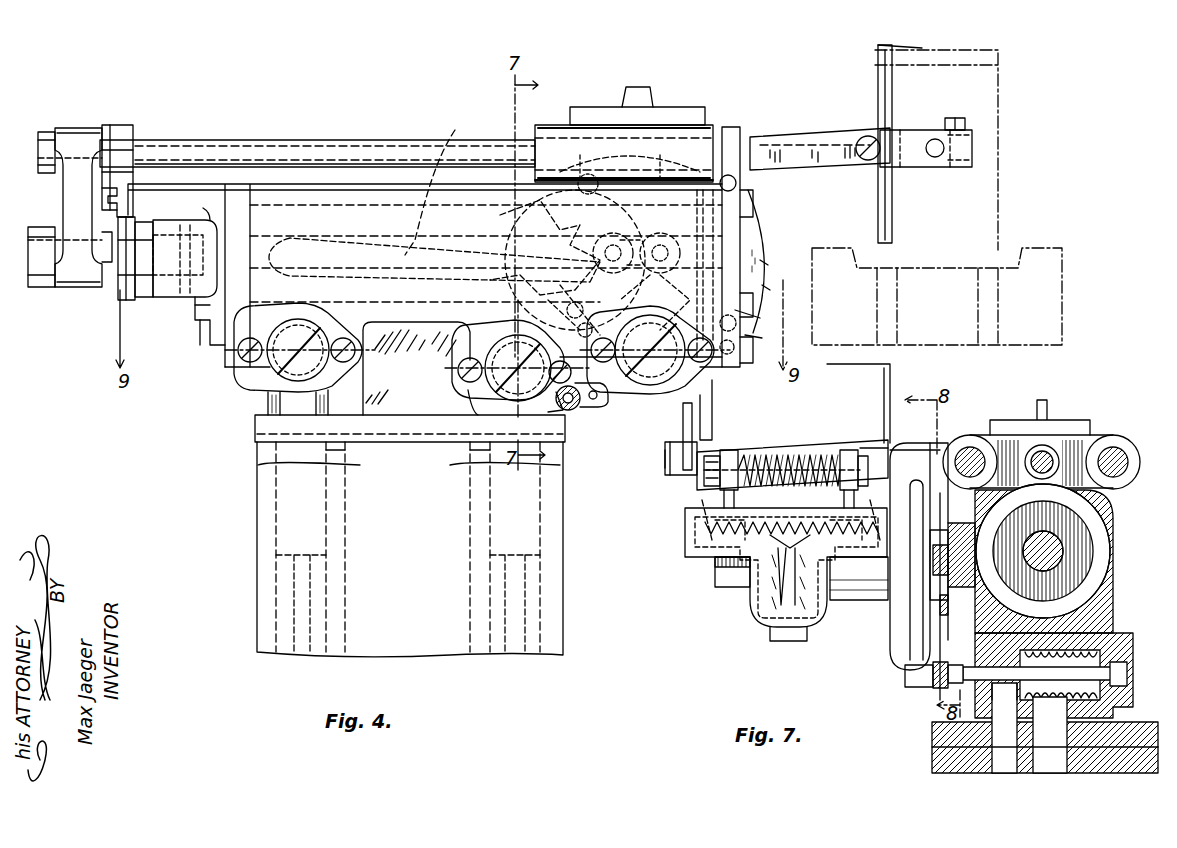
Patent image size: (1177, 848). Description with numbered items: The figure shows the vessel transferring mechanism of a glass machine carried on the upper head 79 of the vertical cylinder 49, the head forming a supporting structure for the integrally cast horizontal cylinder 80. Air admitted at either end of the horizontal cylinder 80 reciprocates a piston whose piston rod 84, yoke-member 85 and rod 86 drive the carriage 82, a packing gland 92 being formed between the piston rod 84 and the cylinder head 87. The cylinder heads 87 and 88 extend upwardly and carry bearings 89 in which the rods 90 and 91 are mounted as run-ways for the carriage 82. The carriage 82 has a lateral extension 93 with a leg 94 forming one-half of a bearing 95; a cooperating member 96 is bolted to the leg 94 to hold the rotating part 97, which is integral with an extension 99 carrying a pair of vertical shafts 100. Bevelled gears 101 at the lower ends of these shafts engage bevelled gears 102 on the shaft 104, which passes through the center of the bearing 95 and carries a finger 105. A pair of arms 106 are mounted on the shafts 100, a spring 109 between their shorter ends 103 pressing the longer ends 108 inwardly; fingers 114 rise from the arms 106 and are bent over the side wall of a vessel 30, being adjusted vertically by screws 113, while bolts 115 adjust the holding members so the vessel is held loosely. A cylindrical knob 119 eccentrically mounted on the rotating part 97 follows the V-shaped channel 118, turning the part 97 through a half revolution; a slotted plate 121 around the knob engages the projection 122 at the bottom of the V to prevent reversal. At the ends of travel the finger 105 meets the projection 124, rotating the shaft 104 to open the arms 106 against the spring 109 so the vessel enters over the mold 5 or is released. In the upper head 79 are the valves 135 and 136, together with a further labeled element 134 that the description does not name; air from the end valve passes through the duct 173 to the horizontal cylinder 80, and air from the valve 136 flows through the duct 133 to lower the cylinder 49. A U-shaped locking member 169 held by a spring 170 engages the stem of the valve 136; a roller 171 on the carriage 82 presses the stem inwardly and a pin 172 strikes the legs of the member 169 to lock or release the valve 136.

In FIG. 4, the mold 5 is at (1064, 277).
In FIG. 4, the vessel 30 is at (1000, 95).
In FIG. 4, the cylinder 49 is at (410, 549).
In FIG. 4, the upper head 79 is at (410, 428).
In FIG. 7, the upper head 79 is at (1125, 740).
In FIG. 4, the horizontal cylinder 80 is at (375, 184).
In FIG. 7, the horizontal cylinder 80 is at (1110, 548).
In FIG. 4, the carriage 82 is at (565, 128).
In FIG. 4, the piston rod 84 is at (105, 272).
In FIG. 7, the piston rod 84 is at (1060, 538).
In FIG. 4, the yoke-member 85 is at (66, 193).
In FIG. 7, the rod 86 is at (1050, 450).
In FIG. 4, the cylinder head 87 is at (215, 300).
In FIG. 4, the cylinder head 88 is at (752, 245).
In FIG. 4, the bearings 89 is at (120, 128).
In FIG. 7, the rod 90 is at (972, 442).
In FIG. 4, the rod 91 is at (300, 140).
In FIG. 7, the rod 91 is at (1118, 447).
In FIG. 4, the packing gland 92 is at (148, 298).
In FIG. 7, the lateral extension 93 is at (920, 460).
In FIG. 7, the leg 94 is at (940, 575).
In FIG. 4, the bearing 95 is at (766, 262).
In FIG. 7, the bearing 95 is at (905, 660).
In FIG. 7, the cooperating member 96 is at (918, 640).
In FIG. 7, the rotating part 97 is at (932, 597).
In FIG. 7, the extension 99 is at (771, 576).
In FIG. 7, the vertical shafts 100 is at (728, 450).
In FIG. 7, the bevelled gears 101 is at (798, 492).
In FIG. 7, the bevelled gears 102 is at (782, 625).
In FIG. 4, the shorter ends 103 is at (718, 407).
In FIG. 7, the shorter ends 103 is at (850, 440).
In FIG. 7, the shaft 104 is at (735, 590).
In FIG. 4, the finger 105 is at (766, 287).
In FIG. 7, the finger 105 is at (870, 448).
In FIG. 4, the arms 106 is at (805, 137).
In FIG. 7, the arms 106 is at (700, 475).
In FIG. 4, the longer ends 108 is at (899, 168).
In FIG. 7, the spring 109 is at (790, 455).
In FIG. 4, the screws 113 is at (862, 162).
In FIG. 4, the fingers 114 is at (878, 95).
In FIG. 4, the bolts 115 is at (968, 124).
In FIG. 4, the channel 118 is at (444, 179).
In FIG. 4, the cylindrical knob 119 is at (641, 268).
In FIG. 4, the slotted plate 121 is at (567, 260).
In FIG. 7, the slotted plate 121 is at (950, 551).
In FIG. 4, the projection 122 is at (470, 335).
In FIG. 4, the projection 124 is at (760, 320).
In FIG. 7, the duct 133 is at (1000, 765).
In FIG. 4, the flange 134 is at (672, 394).
In FIG. 4, the valve 135 is at (262, 372).
In FIG. 4, the valve 136 is at (557, 405).
In FIG. 4, the locking member 169 is at (597, 407).
In FIG. 4, the spring 170 is at (582, 398).
In FIG. 7, the roller 171 is at (920, 687).
In FIG. 4, the pin 172 is at (560, 318).
In FIG. 7, the pin 172 is at (940, 690).
In FIG. 4, the duct 173 is at (764, 338).